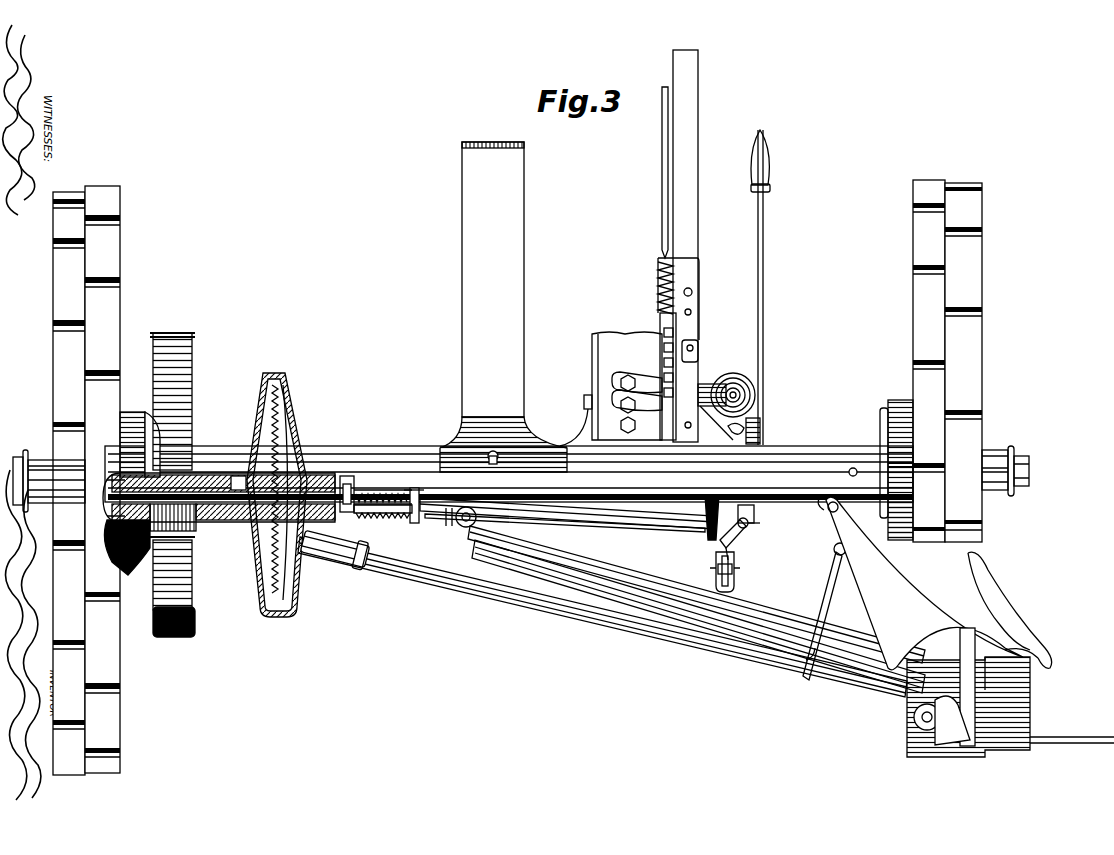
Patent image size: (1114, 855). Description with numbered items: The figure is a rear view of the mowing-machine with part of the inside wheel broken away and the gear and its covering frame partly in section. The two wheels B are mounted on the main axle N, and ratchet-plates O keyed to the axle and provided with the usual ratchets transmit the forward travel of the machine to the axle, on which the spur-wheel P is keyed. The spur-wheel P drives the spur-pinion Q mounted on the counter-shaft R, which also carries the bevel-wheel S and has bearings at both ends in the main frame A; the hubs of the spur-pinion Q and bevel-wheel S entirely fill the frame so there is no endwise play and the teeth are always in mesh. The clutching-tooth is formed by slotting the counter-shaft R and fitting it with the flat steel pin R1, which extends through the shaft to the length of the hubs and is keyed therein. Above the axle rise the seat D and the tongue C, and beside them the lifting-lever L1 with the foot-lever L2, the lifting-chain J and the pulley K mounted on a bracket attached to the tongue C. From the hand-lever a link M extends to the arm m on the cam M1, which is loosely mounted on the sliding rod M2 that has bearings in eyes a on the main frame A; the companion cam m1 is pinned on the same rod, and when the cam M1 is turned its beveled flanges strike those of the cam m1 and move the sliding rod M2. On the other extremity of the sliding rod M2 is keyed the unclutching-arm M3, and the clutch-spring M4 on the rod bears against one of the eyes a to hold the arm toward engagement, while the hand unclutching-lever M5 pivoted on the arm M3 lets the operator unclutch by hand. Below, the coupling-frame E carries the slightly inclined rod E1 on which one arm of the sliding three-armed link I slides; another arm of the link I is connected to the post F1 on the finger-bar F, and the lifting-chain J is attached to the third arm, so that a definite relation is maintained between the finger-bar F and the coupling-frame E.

The wheels B is at (104, 238).
The main frame A is at (380, 452).
The main axle N is at (1025, 460).
The ratchet-plates O is at (140, 418).
The spur-wheel P is at (190, 363).
The counter-shaft R is at (108, 510).
The flat steel pin R1 is at (236, 477).
The spur-pinion Q is at (186, 524).
The bevel-wheel S is at (268, 398).
The unclutching-arm M3 is at (347, 476).
The hand unclutching-lever M5 is at (414, 488).
The clutch-spring M4 is at (374, 512).
The eyes a is at (415, 522).
The sliding rod M2 is at (622, 522).
The coupling-frame E is at (672, 596).
The seat D is at (503, 307).
The tongue C is at (611, 389).
The lifting-lever L1 is at (696, 176).
The foot-lever L2 is at (700, 350).
The pulley K is at (738, 372).
The lifting-chain J is at (762, 430).
The companion cam m1 is at (750, 528).
The cam M1 is at (738, 528).
The link M is at (733, 590).
The arm m is at (715, 570).
The inclined rod E1 is at (862, 636).
The sliding three-armed link I is at (920, 583).
The post F1 is at (1030, 708).
The finger-bar F is at (1038, 745).